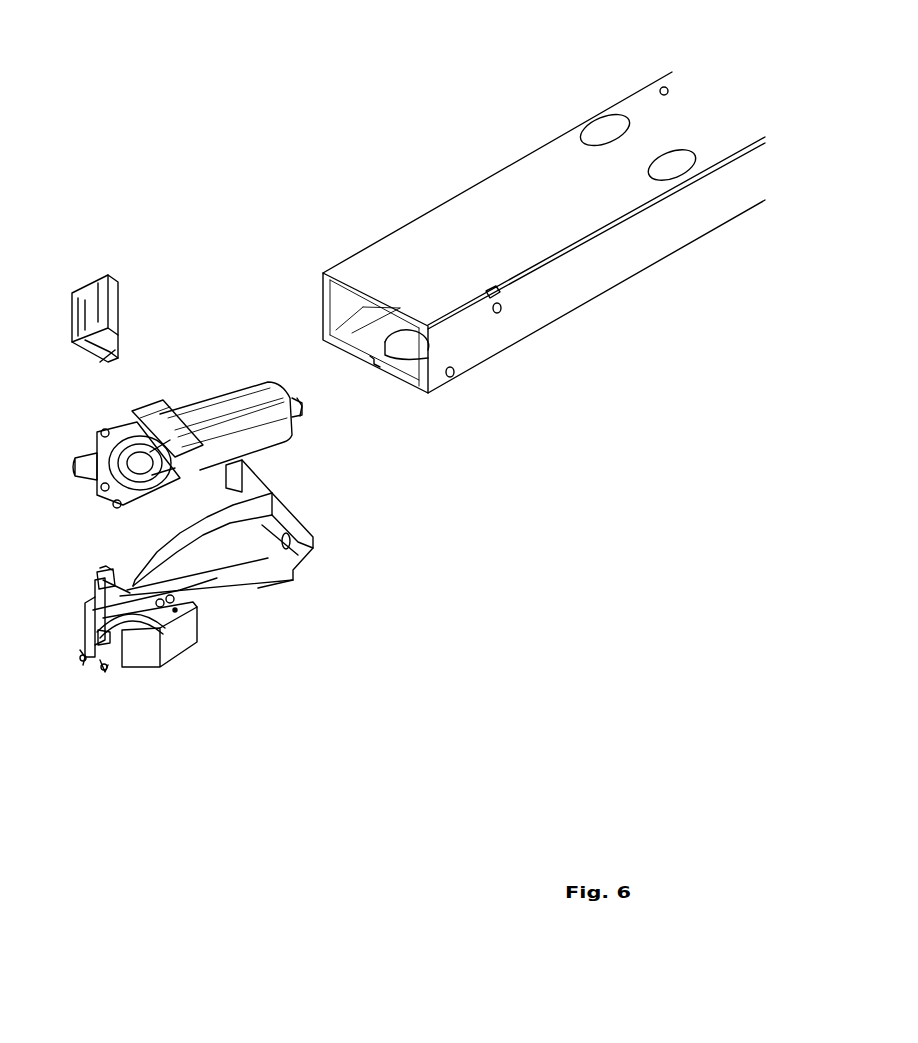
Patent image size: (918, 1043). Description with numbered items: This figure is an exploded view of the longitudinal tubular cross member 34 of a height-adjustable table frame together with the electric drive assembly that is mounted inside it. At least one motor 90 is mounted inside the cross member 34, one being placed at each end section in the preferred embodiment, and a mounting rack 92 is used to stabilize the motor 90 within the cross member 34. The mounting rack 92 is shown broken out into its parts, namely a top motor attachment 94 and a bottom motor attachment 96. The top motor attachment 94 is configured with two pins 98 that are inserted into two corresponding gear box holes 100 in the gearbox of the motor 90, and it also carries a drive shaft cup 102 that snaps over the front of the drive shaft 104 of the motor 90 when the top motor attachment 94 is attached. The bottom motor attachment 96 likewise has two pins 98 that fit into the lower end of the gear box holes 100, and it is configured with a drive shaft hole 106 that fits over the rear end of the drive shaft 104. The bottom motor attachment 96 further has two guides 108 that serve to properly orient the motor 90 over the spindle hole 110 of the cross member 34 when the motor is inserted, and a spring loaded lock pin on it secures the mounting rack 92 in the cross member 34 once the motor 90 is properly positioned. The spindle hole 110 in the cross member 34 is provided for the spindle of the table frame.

The cross member 34 is at (545, 104).
The motor 90 is at (240, 395).
The mounting rack 92 is at (92, 350).
The top motor attachment 94 is at (105, 287).
The bottom motor attachment 96 is at (180, 633).
The pins 98 is at (112, 335).
The gear box holes 100 is at (110, 420).
The drive shaft cup 102 is at (77, 350).
The drive shaft 104 is at (82, 452).
The drive shaft hole 106 is at (281, 542).
The guides 108 is at (312, 540).
The spindle hole 110 is at (403, 340).